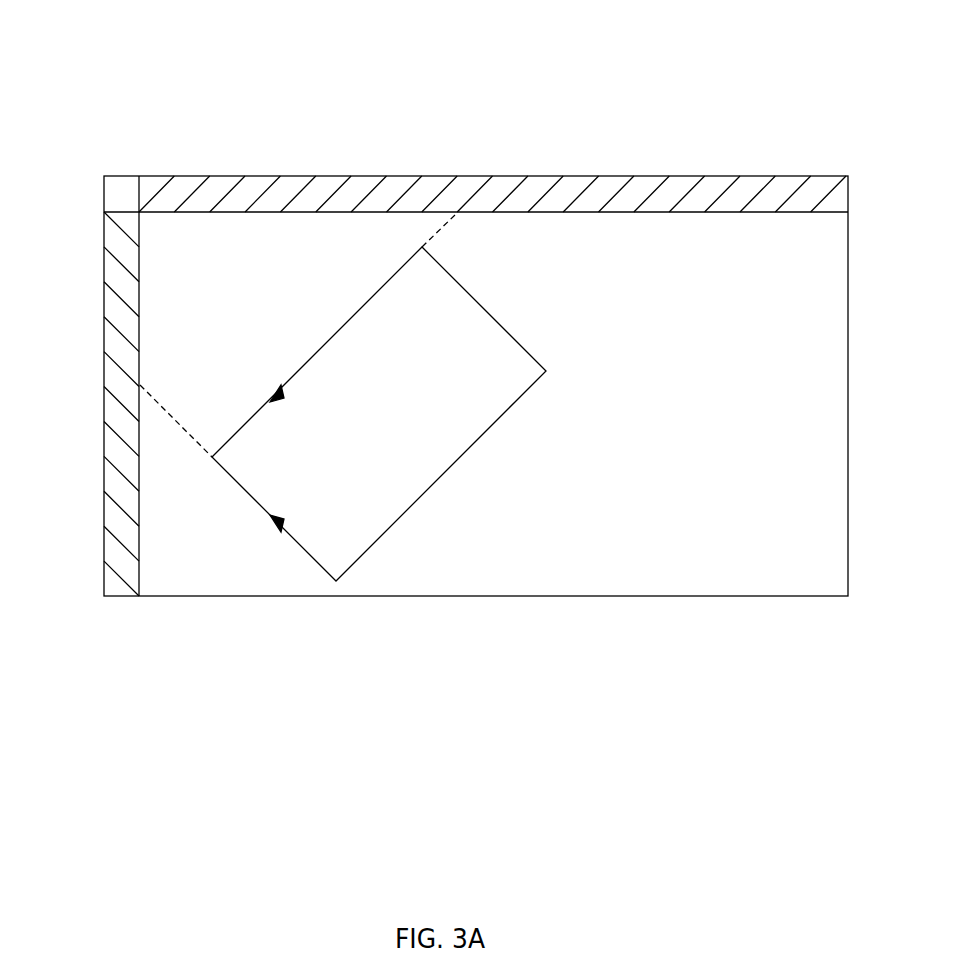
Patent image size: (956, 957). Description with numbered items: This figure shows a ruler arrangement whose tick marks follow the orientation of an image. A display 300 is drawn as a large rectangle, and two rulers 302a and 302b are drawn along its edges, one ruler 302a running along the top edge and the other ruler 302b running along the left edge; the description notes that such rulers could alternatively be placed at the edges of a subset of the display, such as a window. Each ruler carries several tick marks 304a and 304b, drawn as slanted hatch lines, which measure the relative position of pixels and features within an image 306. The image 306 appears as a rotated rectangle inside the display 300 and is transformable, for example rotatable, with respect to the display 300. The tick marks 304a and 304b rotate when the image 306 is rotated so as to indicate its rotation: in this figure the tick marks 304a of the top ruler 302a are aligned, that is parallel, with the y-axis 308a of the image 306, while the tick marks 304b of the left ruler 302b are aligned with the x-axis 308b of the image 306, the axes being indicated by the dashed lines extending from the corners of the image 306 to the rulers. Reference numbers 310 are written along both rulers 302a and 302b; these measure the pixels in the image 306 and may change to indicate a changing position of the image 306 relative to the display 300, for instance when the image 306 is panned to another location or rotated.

The display 300 is at (153, 58).
The ruler 302a is at (255, 175).
The ruler 302b is at (103, 510).
The tick marks 304a is at (578, 198).
The tick marks 304b is at (128, 339).
The image 306 is at (493, 425).
The y-axis 308a is at (433, 241).
The x-axis 308b is at (193, 438).
The reference numbers 310 is at (572, 158).